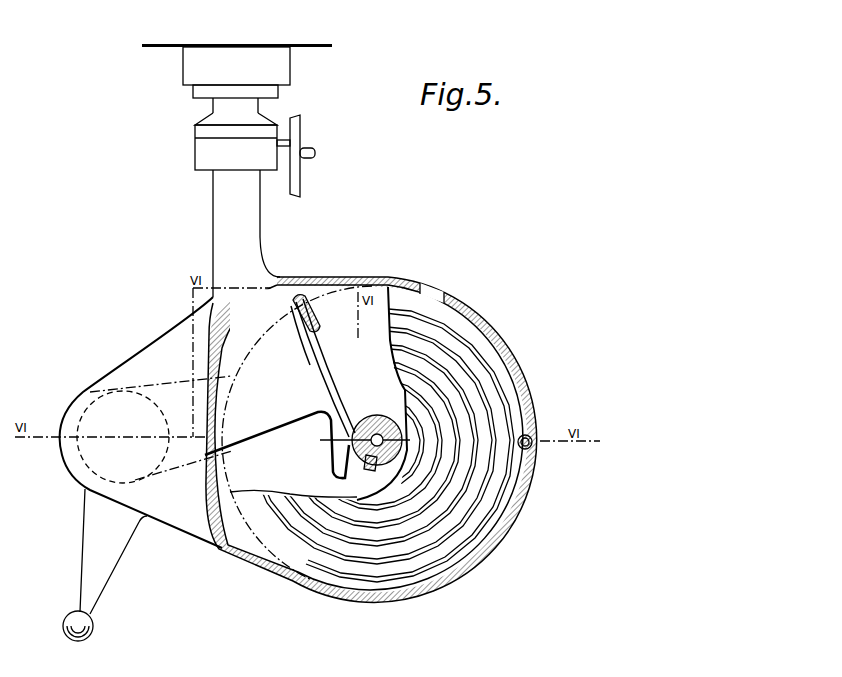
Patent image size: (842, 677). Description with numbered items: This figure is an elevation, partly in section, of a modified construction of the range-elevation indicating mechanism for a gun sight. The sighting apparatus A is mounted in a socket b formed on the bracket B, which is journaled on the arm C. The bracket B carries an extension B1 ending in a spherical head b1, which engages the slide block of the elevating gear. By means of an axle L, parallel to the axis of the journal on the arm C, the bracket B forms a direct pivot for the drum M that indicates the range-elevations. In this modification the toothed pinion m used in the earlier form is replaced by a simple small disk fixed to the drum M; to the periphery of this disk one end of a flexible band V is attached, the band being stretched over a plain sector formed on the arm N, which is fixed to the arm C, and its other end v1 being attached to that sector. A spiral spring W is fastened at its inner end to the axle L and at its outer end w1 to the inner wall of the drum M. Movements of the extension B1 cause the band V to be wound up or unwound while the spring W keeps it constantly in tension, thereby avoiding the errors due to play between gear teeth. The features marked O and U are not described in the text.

The sighting apparatus A is at (213, 146).
The socket b is at (220, 207).
The bracket B is at (385, 280).
The extension B1 is at (97, 583).
The spherical head b1 is at (88, 628).
The range-elevation drum M is at (392, 598).
The opening O is at (443, 296).
The spiral spring W is at (485, 368).
The arm C is at (97, 473).
The band end v1 is at (303, 300).
The flexible band V is at (348, 369).
The arm N is at (268, 423).
The axle L is at (356, 441).
The pinion m is at (385, 422).
The stop U is at (371, 464).
The outer end of spiral spring w1 is at (542, 452).